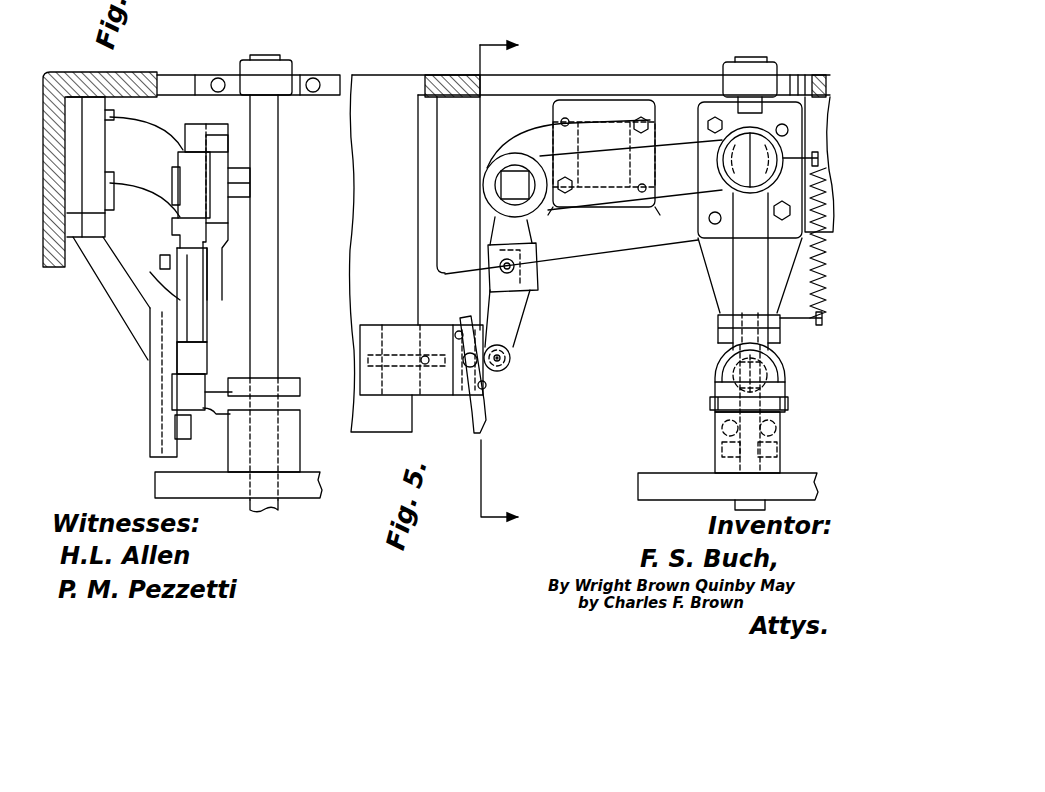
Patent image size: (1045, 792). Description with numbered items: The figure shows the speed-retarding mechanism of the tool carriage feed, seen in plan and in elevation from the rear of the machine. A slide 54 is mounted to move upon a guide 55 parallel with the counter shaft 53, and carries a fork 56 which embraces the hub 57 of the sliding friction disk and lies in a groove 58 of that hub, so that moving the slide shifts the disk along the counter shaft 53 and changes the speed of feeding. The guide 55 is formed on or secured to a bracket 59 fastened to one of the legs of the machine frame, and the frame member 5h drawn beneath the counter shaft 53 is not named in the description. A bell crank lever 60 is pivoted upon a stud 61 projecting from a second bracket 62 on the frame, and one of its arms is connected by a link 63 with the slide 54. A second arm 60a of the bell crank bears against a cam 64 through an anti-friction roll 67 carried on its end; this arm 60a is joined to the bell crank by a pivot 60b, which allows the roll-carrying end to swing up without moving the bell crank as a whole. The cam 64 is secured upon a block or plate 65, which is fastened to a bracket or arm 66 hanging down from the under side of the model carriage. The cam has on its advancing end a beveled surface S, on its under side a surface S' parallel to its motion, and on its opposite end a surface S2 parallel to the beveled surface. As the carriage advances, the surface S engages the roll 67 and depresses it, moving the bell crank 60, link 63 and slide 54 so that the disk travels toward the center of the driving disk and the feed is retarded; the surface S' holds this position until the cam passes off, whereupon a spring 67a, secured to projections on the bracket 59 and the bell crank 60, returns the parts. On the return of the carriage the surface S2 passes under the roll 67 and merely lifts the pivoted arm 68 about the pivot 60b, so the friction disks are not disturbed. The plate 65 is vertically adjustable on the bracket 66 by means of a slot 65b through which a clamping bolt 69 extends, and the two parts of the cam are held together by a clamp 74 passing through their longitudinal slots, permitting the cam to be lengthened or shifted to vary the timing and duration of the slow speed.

In FIG. 4, the counter shaft 53 is at (268, 254).
In FIG. 5, the counter shaft 53 is at (748, 110).
In FIG. 5, the slide 54 is at (728, 340).
In FIG. 4, the guide 55 is at (152, 412).
In FIG. 5, the guide 55 is at (722, 316).
In FIG. 4, the fork 56 is at (292, 400).
In FIG. 5, the fork 56 is at (716, 404).
In FIG. 4, the hub 57 is at (288, 434).
In FIG. 5, the hub 57 is at (718, 450).
In FIG. 5, the groove 58 is at (735, 388).
In FIG. 4, the bracket 59 is at (118, 296).
In FIG. 5, the bracket 59 is at (718, 258).
In FIG. 4, the bell crank lever 60 is at (205, 145).
In FIG. 5, the bell crank lever 60 is at (602, 178).
In FIG. 4, the second arm of bell crank 60a is at (190, 297).
In FIG. 5, the second arm of bell crank 60a is at (520, 348).
In FIG. 4, the pivot 60b is at (222, 262).
In FIG. 5, the pivot 60b is at (500, 262).
In FIG. 4, the stud 61 is at (178, 180).
In FIG. 5, the stud 61 is at (512, 180).
In FIG. 4, the second bracket 62 is at (145, 167).
In FIG. 5, the second bracket 62 is at (548, 138).
In FIG. 4, the link 63 is at (200, 298).
In FIG. 5, the link 63 is at (750, 271).
In FIG. 5, the cam 64 is at (497, 372).
In FIG. 5, the block or plate 65 is at (382, 328).
In FIG. 5, the slot 65b is at (440, 398).
In FIG. 5, the bracket or arm 66 is at (398, 253).
In FIG. 4, the anti-friction roll 67 is at (210, 368).
In FIG. 5, the spring 67a is at (812, 290).
In FIG. 4, the pivoted arm 68 is at (172, 230).
In FIG. 5, the pivoted arm 68 is at (534, 236).
In FIG. 5, the clamping bolt 69 is at (422, 356).
In FIG. 5, the clamp 74 is at (478, 366).
In FIG. 5, the beveled surface S is at (485, 187).
In FIG. 5, the under surface S' is at (499, 476).
In FIG. 5, the return surface S2 is at (470, 412).
In FIG. 4, the base bar 5h is at (228, 492).
In FIG. 5, the base bar 5h is at (672, 482).